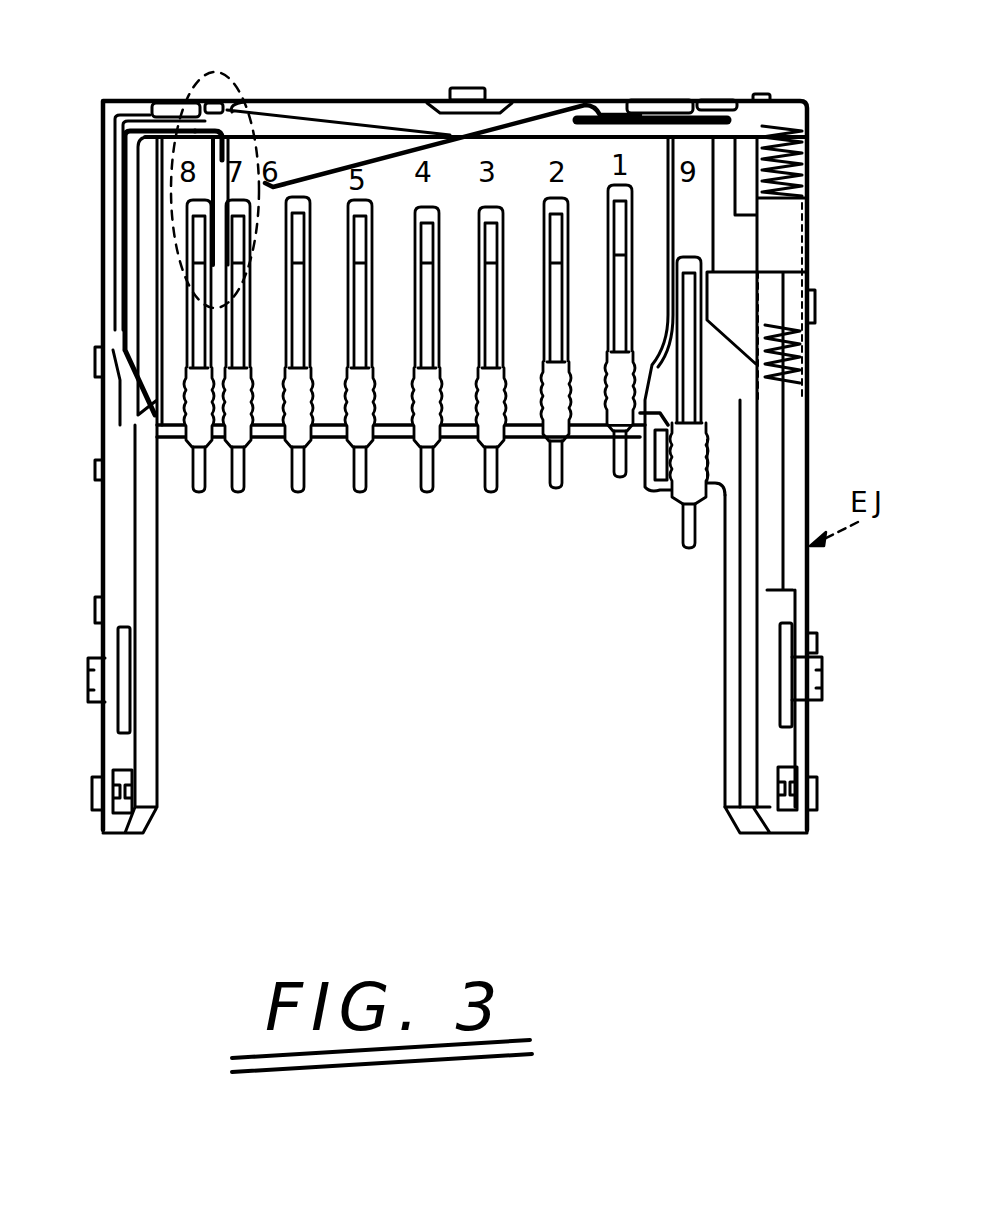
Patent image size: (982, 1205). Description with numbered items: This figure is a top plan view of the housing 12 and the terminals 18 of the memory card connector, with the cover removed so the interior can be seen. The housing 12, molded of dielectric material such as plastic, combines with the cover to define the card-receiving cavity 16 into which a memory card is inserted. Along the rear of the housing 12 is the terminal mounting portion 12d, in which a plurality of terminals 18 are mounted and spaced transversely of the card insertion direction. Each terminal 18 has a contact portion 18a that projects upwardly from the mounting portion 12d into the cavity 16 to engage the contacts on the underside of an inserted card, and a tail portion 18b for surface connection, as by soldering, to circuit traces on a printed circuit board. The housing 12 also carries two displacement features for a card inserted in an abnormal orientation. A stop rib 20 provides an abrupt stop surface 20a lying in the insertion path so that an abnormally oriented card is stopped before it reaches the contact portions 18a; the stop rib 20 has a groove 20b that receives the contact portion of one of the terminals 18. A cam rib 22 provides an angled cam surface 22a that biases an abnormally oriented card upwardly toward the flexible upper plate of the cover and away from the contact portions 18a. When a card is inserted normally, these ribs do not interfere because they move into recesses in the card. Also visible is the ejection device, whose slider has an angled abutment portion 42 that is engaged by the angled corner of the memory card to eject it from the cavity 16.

The housing 12 is at (150, 632).
The terminal mounting portion 12d is at (525, 143).
The card-receiving cavity 16 is at (493, 770).
The terminals 18 is at (461, 319).
The contact portions 18a is at (253, 220).
The tail portions 18b is at (233, 493).
The stop rib 20 is at (703, 177).
The abrupt stop surface 20a is at (642, 455).
The groove 20b is at (693, 255).
The cam rib 22 is at (213, 230).
The angled cam surface 22a is at (238, 262).
The angled abutment portion 42 is at (745, 320).